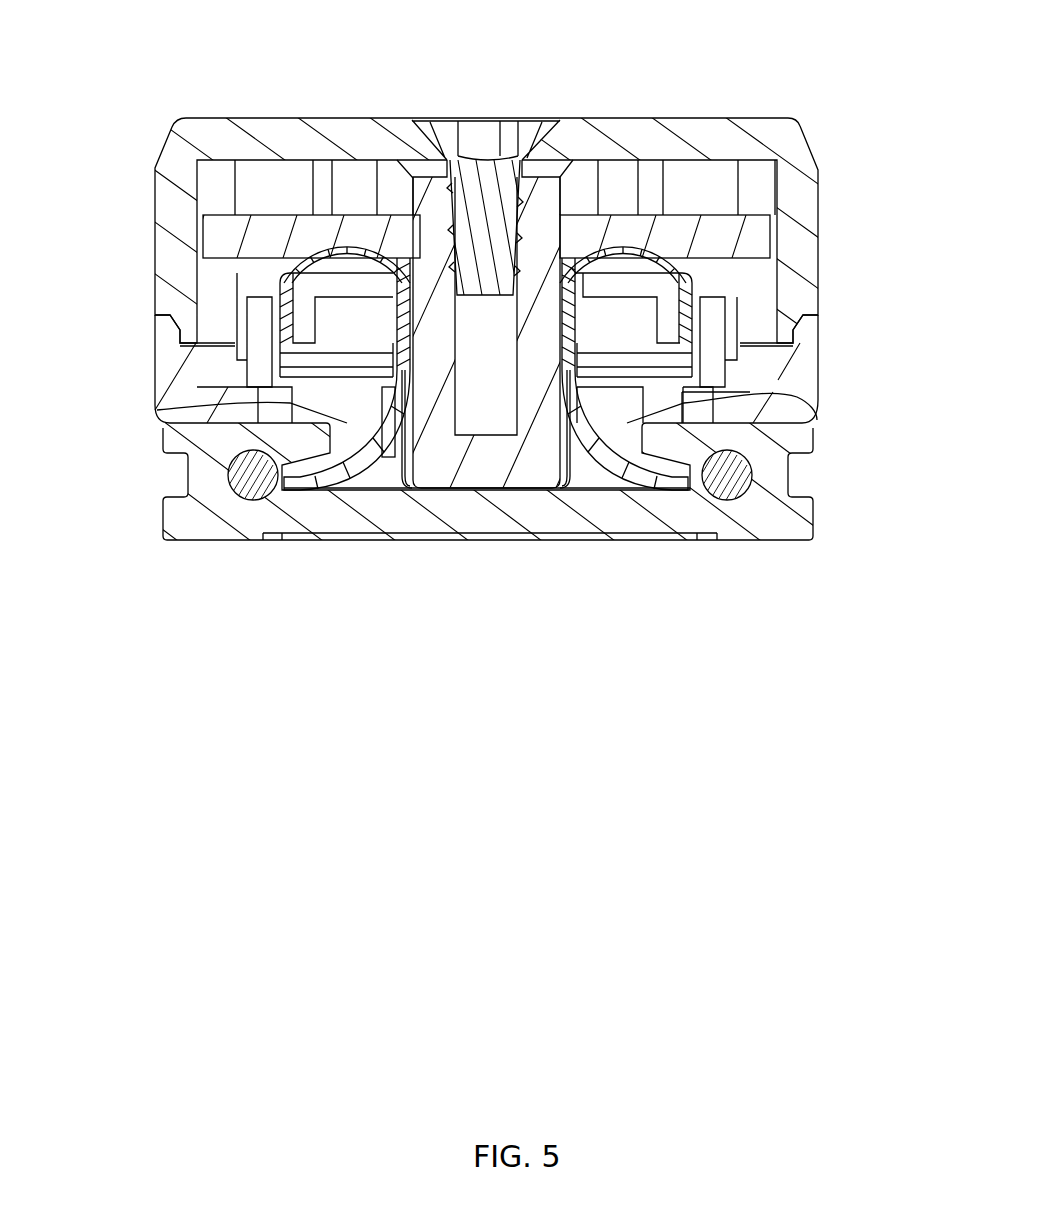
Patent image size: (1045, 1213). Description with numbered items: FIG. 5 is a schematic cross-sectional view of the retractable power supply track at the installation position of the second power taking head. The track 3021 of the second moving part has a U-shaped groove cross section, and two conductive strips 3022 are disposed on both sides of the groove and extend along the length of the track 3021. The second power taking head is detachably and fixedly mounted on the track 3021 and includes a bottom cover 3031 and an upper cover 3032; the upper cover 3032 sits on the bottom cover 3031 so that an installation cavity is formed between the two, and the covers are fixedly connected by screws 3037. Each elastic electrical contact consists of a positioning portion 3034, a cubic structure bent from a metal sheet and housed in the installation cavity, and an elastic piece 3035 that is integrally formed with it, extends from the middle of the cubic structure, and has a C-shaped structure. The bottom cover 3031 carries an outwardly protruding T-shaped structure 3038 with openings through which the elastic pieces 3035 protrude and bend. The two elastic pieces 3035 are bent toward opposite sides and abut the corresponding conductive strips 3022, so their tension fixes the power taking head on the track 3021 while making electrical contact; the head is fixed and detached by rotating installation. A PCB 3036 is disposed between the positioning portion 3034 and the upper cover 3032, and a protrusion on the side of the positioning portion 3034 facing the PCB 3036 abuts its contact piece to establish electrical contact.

The track 3021 is at (797, 517).
The conductive strip 3022 is at (752, 470).
The bottom cover 3031 is at (743, 400).
The upper cover 3032 is at (750, 133).
The positioning portion 3034 is at (258, 272).
The elastic piece 3035 is at (157, 410).
The PCB 3036 is at (750, 242).
The screw 3037 is at (480, 137).
The T-shaped structure 3038 is at (485, 450).